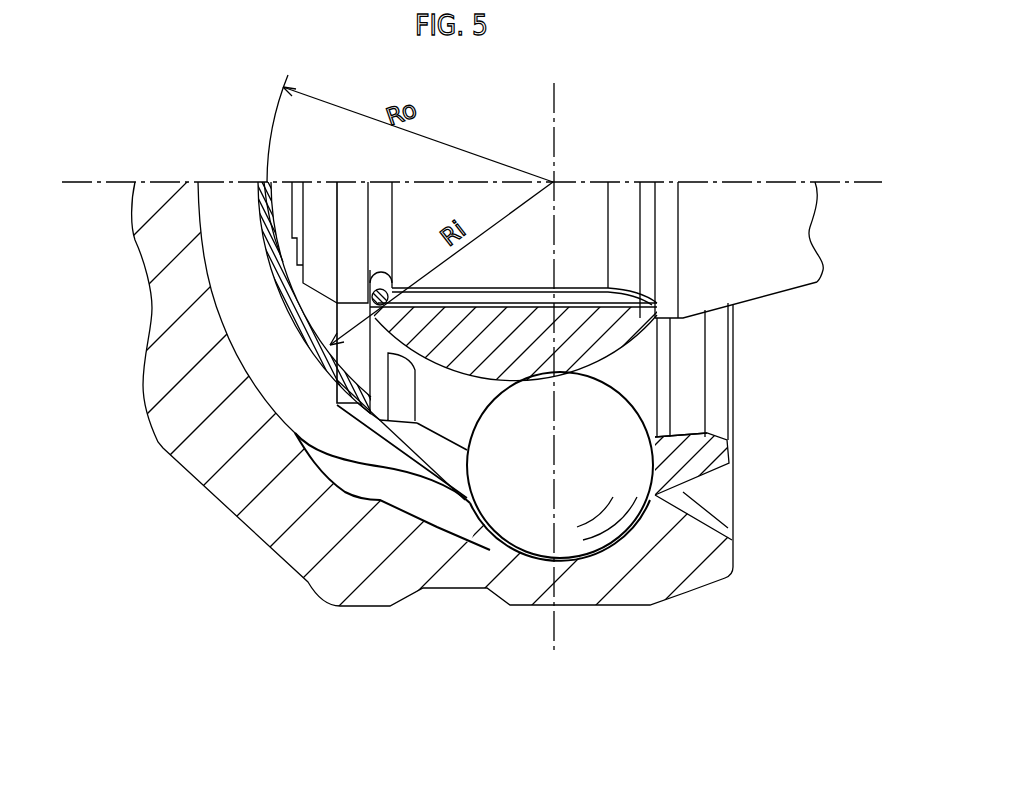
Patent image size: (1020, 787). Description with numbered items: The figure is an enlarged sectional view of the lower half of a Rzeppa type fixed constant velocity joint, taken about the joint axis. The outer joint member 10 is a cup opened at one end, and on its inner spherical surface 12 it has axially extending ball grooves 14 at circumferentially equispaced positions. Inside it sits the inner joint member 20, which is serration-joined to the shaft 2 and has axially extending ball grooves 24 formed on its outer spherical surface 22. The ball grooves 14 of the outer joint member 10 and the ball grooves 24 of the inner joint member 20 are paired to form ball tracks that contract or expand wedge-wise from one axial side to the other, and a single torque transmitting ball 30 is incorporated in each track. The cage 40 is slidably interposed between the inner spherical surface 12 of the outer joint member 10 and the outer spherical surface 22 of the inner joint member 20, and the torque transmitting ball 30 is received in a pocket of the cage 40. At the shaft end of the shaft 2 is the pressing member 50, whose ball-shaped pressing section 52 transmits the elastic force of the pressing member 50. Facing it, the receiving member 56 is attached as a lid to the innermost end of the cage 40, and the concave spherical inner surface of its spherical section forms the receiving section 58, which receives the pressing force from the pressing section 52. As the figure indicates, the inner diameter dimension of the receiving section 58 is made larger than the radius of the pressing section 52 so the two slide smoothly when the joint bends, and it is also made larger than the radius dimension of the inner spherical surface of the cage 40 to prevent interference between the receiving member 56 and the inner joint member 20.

The shaft 2 is at (800, 287).
The outer joint member 10 is at (375, 607).
The inner spherical surface 12 is at (430, 487).
The ball grooves 14 is at (660, 552).
The inner joint member 20 is at (663, 388).
The outer spherical surface 22 is at (382, 463).
The ball grooves 24 is at (637, 340).
The torque transmitting ball 30 is at (604, 470).
The cage 40 is at (737, 453).
The pressing member 50 is at (290, 248).
The pressing section 52 is at (285, 218).
The receiving member 56 is at (258, 203).
The receiving section 58 is at (272, 200).